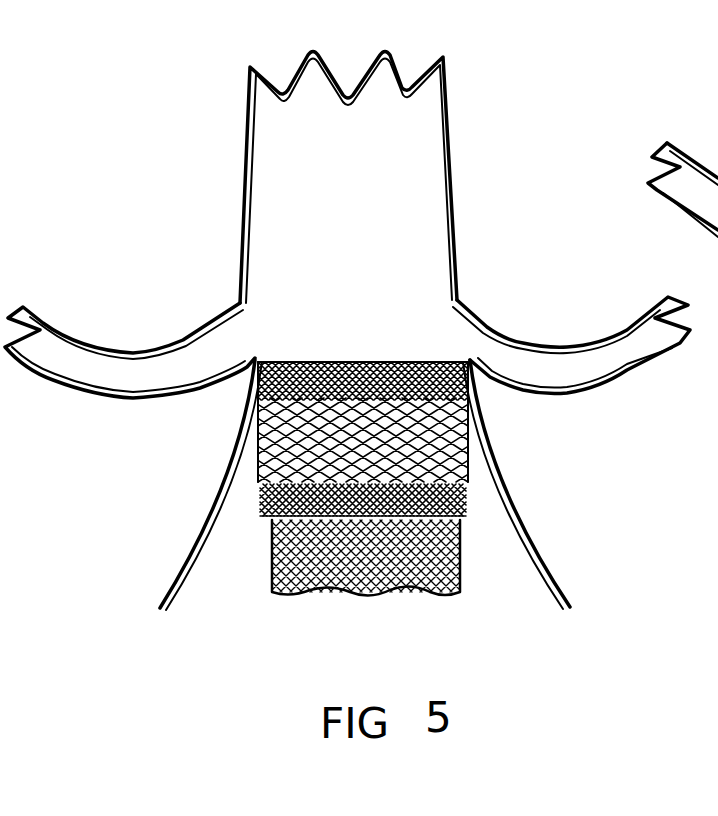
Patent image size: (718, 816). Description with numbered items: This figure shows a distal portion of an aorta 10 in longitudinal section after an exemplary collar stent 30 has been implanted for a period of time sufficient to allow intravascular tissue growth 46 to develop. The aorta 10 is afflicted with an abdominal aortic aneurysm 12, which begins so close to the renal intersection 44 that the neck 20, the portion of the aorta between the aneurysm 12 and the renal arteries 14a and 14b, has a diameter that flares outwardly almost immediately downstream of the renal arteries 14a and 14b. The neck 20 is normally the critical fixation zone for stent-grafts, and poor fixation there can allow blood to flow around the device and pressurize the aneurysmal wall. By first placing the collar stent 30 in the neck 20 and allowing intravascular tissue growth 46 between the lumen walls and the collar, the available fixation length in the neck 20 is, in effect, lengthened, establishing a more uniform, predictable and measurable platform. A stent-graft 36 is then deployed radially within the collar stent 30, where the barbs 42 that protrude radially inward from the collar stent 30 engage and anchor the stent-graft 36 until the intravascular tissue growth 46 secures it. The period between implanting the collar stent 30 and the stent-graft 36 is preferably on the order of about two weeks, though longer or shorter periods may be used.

The aorta 10 is at (250, 208).
The abdominal aortic aneurysm 12 is at (173, 572).
The renal artery 14a is at (200, 340).
The renal artery 14b is at (549, 338).
The neck 20 is at (492, 357).
The collar stent 30 is at (257, 507).
The stent-graft 36 is at (460, 557).
The barbs 42 is at (258, 408).
The renal intersection 44 is at (385, 341).
The intravascular tissue growth 46 is at (257, 493).